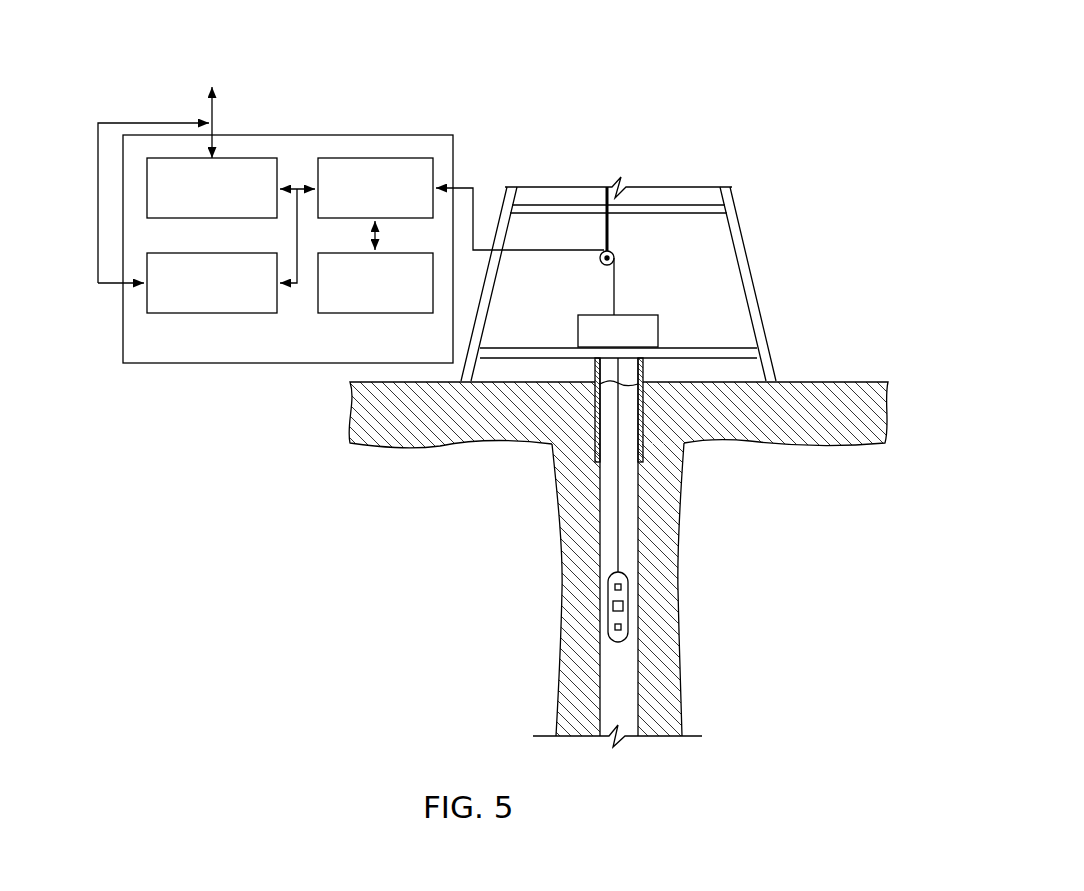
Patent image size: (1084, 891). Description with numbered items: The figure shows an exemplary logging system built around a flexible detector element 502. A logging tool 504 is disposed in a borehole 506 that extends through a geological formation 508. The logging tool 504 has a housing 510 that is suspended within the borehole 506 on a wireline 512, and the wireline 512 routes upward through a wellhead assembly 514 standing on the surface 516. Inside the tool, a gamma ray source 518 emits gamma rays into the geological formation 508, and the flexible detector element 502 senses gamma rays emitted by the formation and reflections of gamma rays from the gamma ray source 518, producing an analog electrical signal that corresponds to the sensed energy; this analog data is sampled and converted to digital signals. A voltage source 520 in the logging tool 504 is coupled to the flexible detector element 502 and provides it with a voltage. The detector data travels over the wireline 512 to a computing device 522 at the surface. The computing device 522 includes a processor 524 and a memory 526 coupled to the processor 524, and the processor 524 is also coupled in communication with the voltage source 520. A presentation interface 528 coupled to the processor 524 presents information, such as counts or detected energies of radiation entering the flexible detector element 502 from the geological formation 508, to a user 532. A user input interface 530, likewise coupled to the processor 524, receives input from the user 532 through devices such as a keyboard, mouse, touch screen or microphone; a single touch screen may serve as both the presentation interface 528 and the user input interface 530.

The flexible detector element 502 is at (641, 645).
The logging tool 504 is at (621, 606).
The borehole 506 is at (644, 698).
The geological formation 508 is at (665, 530).
The housing 510 is at (640, 574).
The wireline 512 is at (619, 487).
The wellhead assembly 514 is at (640, 315).
The surface 516 is at (820, 382).
The gamma ray source 518 is at (608, 626).
The voltage source 520 is at (608, 589).
The computing device 522 is at (428, 135).
The processor 524 is at (375, 158).
The memory 526 is at (335, 314).
The presentation interface 528 is at (242, 158).
The user input interface 530 is at (146, 314).
The user 532 is at (213, 63).